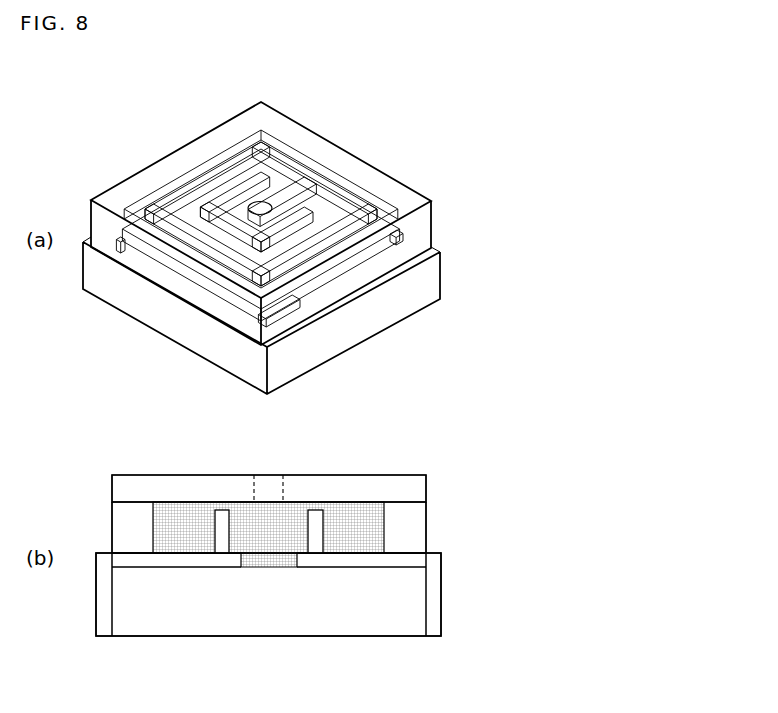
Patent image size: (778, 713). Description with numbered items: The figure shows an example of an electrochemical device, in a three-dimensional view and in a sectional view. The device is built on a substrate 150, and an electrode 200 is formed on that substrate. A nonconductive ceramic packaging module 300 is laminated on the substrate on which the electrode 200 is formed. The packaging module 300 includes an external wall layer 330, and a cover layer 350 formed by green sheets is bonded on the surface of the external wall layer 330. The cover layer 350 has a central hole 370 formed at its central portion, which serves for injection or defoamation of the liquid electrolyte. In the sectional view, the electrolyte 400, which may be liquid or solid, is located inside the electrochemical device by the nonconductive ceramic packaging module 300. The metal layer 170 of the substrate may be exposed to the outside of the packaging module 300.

The substrate 150 is at (170, 318).
The metal layer 170 is at (432, 283).
The electrode 200 is at (215, 528).
The nonconductive ceramic packaging module 300 is at (493, 484).
The external wall layer 330 is at (422, 226).
The cover layer 350 is at (167, 170).
The central hole 370 is at (263, 196).
The electrolyte 400 is at (268, 540).